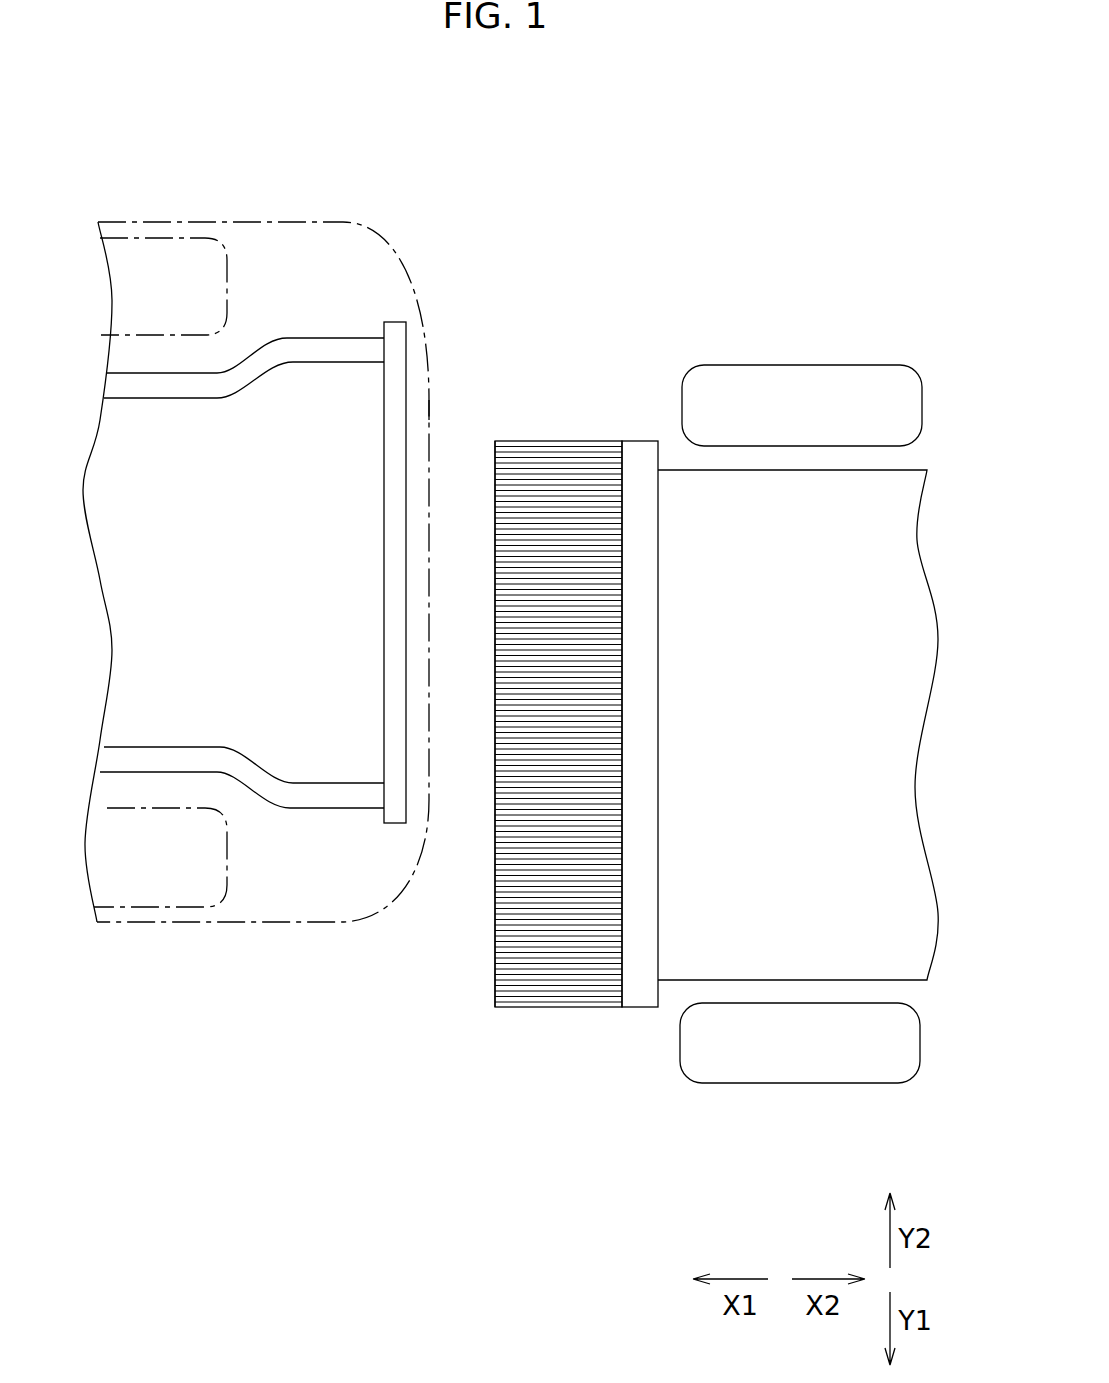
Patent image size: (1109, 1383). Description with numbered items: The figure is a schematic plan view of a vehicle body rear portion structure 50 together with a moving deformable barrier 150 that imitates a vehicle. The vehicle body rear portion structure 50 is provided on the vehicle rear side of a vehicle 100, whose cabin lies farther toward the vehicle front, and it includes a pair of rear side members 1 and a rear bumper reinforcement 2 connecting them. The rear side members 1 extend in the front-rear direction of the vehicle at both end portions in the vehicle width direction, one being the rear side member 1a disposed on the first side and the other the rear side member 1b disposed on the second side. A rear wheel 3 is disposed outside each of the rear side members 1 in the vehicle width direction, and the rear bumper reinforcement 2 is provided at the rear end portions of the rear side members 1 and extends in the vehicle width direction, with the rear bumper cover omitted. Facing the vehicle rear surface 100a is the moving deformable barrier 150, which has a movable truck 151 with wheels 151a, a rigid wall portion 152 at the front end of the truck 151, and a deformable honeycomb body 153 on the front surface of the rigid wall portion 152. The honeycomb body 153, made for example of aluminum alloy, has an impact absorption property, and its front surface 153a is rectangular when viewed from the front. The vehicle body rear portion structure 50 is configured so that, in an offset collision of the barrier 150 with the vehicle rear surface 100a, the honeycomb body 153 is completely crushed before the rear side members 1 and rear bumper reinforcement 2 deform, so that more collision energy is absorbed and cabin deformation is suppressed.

The vehicle 100 is at (303, 222).
The vehicle rear surface 100a is at (432, 378).
The rear wheel 3 is at (228, 281).
The vehicle body rear portion structure 50 is at (257, 500).
The rear side member 1 is at (242, 573).
The rear side member 1a is at (163, 750).
The rear side member 1b is at (170, 392).
The rear bumper reinforcement 2 is at (392, 568).
The moving deformable barrier 150 is at (677, 697).
The movable truck 151 is at (898, 515).
The wheels 151a is at (835, 365).
The rigid wall portion 152 is at (641, 440).
The honeycomb body 153 is at (558, 440).
The front surface 153a is at (495, 962).